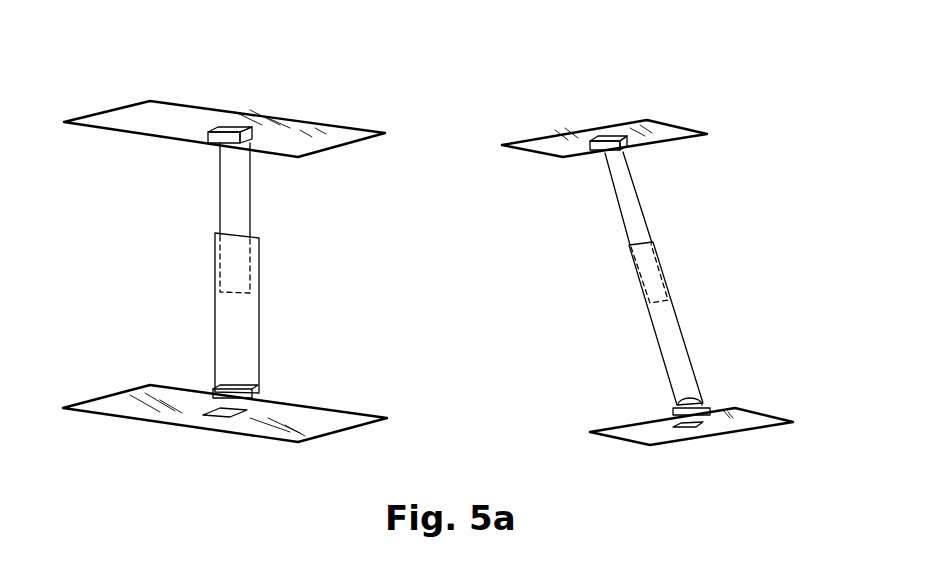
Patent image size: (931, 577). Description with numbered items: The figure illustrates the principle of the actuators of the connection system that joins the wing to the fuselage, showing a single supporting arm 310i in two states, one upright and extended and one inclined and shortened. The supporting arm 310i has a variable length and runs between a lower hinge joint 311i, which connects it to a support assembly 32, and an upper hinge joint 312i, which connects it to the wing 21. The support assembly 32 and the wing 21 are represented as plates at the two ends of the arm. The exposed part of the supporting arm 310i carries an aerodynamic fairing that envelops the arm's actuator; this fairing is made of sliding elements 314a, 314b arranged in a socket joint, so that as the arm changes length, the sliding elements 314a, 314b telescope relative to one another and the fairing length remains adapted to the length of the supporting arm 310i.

The wing 21 is at (308, 112).
The support assembly 32 is at (257, 448).
The supporting arm 310i is at (206, 254).
The lower hinge joint 311i is at (210, 361).
The upper hinge joint 312i is at (203, 138).
The sliding element 314a is at (239, 317).
The sliding element 314b is at (239, 212).